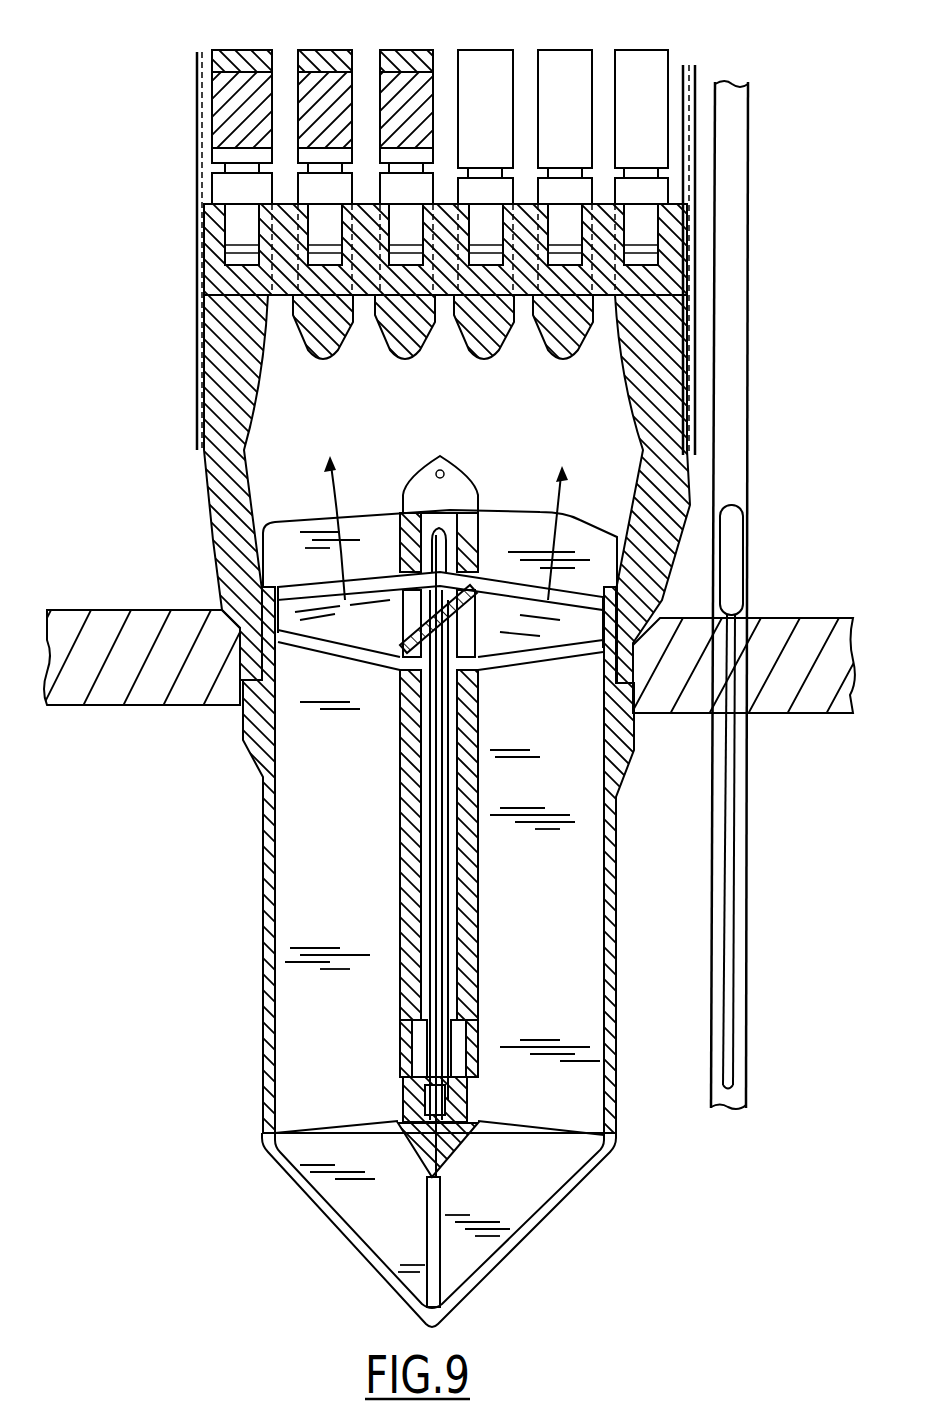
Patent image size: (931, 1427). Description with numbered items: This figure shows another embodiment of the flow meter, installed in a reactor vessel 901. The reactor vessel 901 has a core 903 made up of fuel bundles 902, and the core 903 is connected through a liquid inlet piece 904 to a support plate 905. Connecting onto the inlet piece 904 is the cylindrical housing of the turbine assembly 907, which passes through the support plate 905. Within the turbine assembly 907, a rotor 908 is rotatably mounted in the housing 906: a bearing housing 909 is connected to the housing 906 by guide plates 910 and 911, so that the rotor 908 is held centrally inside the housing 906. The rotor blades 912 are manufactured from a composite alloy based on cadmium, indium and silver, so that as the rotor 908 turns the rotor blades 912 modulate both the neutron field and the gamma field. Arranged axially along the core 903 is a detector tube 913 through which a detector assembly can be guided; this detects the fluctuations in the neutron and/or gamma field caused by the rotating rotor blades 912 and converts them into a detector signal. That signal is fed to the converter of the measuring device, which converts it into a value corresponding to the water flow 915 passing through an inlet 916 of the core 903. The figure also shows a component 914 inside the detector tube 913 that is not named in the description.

The reactor vessel 901 is at (124, 139).
The fuel bundles 902 is at (322, 46).
The core 903 is at (196, 256).
The liquid inlet piece 904 is at (215, 525).
The support plate 905 is at (115, 625).
The housing 906 is at (270, 910).
The turbine assembly 907 is at (180, 1050).
The rotor 908 is at (447, 726).
The bearing housing 909 is at (470, 980).
The guide plate 910 is at (305, 1074).
The guide plate 911 is at (362, 518).
The rotor blades 912 is at (378, 630).
The detector tube 913 is at (738, 155).
The float 914 is at (733, 545).
The water flow 915 is at (330, 498).
The inlet 916 is at (260, 396).